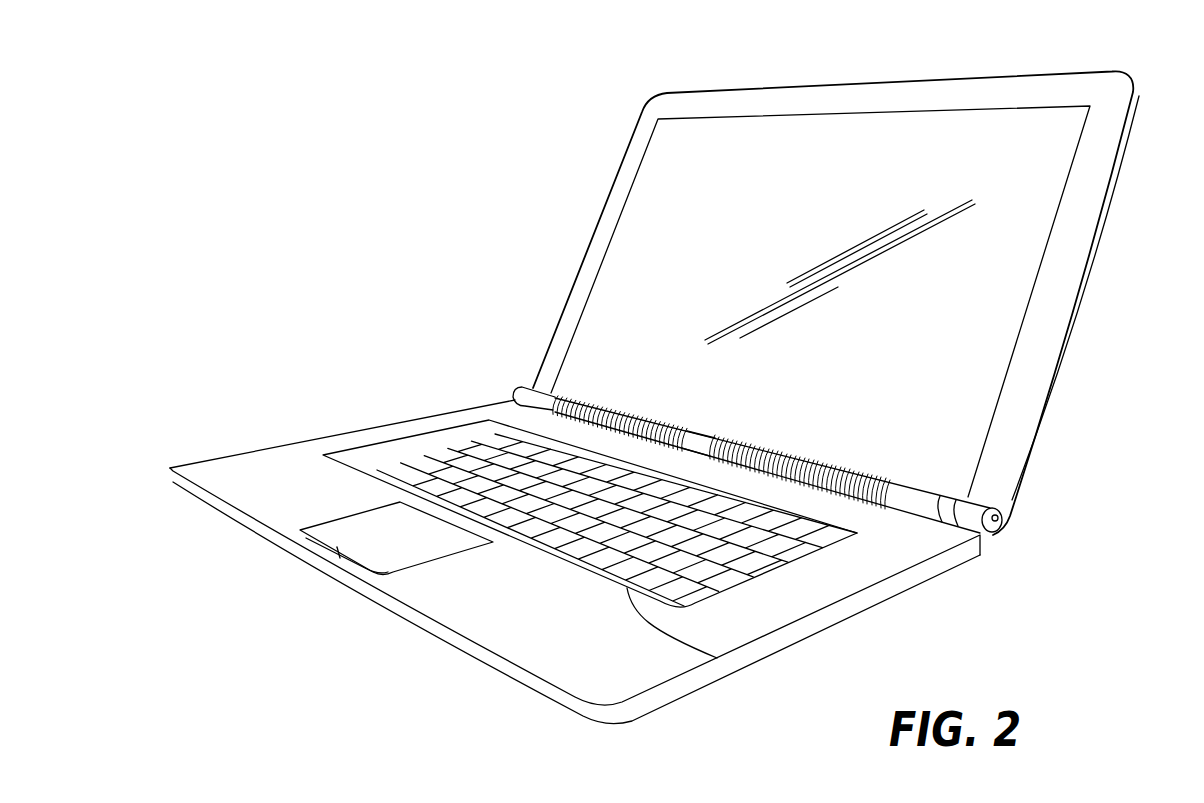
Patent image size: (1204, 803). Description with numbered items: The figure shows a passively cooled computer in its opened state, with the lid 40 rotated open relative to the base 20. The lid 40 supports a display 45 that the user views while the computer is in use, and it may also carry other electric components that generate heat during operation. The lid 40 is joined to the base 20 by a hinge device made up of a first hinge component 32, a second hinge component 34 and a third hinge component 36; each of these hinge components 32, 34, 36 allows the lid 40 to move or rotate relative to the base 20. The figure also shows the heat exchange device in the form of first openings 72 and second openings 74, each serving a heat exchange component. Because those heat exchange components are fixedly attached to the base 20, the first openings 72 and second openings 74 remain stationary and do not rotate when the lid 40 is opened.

The base 20 is at (697, 680).
The first hinge component 32 is at (917, 502).
The second hinge component 34 is at (701, 442).
The third hinge component 36 is at (545, 400).
The lid 40 is at (1103, 217).
The display 45 is at (872, 148).
The first openings 72 is at (865, 478).
The second openings 74 is at (563, 428).